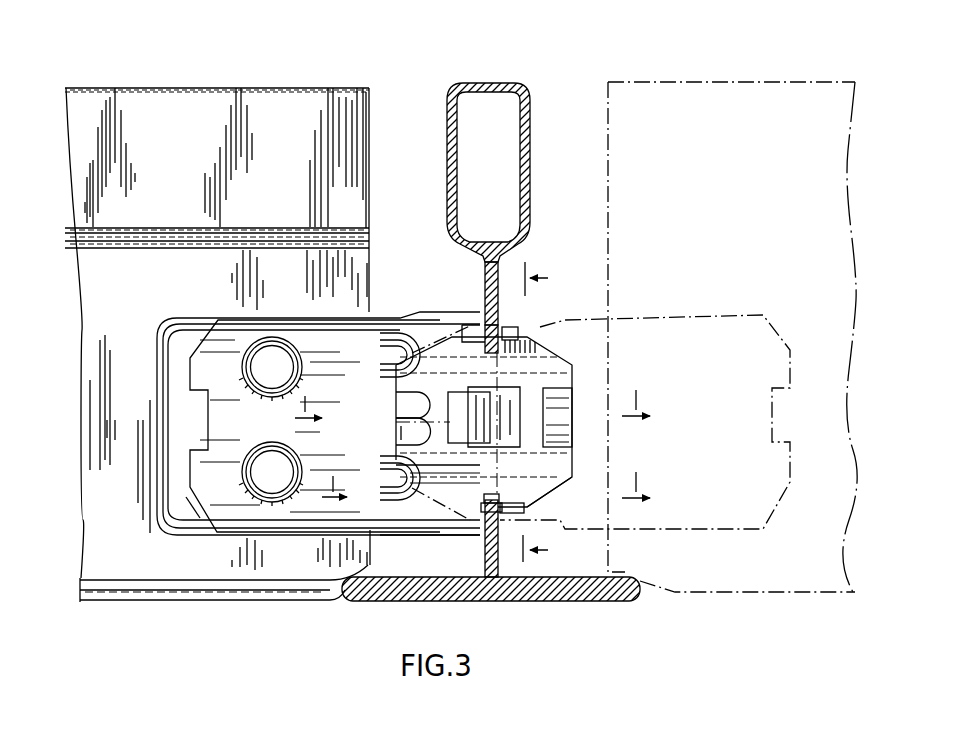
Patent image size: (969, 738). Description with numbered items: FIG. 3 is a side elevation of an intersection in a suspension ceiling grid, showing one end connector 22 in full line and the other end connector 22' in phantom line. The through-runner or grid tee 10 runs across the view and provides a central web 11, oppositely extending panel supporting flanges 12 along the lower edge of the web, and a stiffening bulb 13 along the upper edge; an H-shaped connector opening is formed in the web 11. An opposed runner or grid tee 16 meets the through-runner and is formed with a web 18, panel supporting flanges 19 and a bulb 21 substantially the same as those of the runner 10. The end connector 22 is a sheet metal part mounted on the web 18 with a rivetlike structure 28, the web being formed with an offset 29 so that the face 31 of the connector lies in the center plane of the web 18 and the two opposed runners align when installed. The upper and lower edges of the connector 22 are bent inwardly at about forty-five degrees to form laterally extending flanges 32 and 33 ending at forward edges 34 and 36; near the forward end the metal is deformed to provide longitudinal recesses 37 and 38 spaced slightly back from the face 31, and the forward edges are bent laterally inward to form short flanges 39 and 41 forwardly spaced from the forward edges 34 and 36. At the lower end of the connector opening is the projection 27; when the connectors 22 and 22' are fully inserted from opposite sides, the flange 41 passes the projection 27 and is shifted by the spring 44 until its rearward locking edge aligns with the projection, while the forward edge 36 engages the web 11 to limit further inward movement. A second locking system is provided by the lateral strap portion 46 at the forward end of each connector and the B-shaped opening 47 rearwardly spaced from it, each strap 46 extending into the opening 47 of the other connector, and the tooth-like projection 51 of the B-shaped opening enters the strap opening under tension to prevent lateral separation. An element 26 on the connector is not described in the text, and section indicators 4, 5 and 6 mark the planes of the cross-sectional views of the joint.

The through-runner or grid tee 10 is at (540, 76).
The central web 11 is at (470, 580).
The panel supporting flanges 12 is at (410, 580).
The stiffening bulb 13 is at (531, 135).
The opposed runner or grid tee 16 is at (338, 84).
The web 18 is at (88, 440).
The panel supporting flanges 19 is at (148, 582).
The bulb 21 is at (248, 87).
The end connector 22 is at (484, 378).
The end connector 22' is at (678, 337).
The upper bracket 26 is at (462, 322).
The projection 27 is at (496, 494).
The rivetlike structure 28 is at (252, 396).
The offset 29 is at (188, 520).
The face of the connector 31 is at (324, 456).
The upper flange 32 is at (394, 318).
The lower flange 33 is at (406, 533).
The forward edge of upper flange 34 is at (486, 330).
The forward edge of lower flange 36 is at (487, 514).
The upper recess 37 is at (553, 342).
The lower recess 38 is at (533, 503).
The short upper flange 39 is at (517, 323).
The short lower flange 41 is at (524, 508).
The spring 44 is at (467, 428).
The lateral strap portion 46 is at (565, 418).
The B-shaped opening 47 is at (396, 440).
The tooth-like projection 51 is at (393, 423).
The section line 4- 4 is at (535, 420).
The section line 5- 5 is at (472, 409).
The section line 6- 6 is at (486, 491).